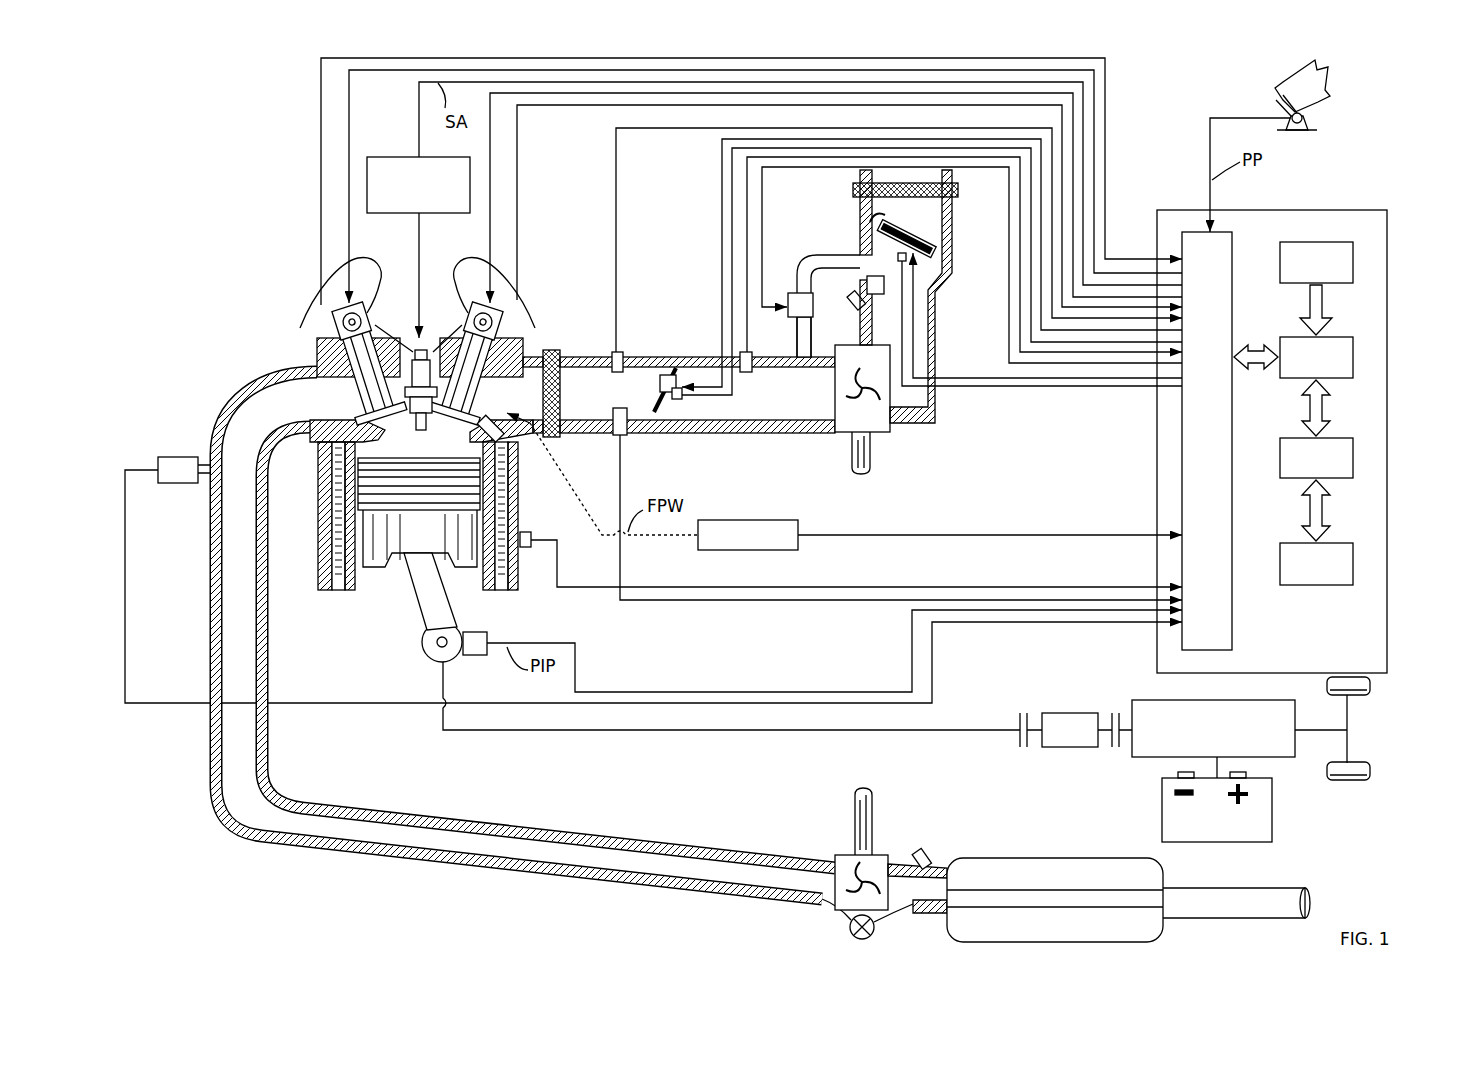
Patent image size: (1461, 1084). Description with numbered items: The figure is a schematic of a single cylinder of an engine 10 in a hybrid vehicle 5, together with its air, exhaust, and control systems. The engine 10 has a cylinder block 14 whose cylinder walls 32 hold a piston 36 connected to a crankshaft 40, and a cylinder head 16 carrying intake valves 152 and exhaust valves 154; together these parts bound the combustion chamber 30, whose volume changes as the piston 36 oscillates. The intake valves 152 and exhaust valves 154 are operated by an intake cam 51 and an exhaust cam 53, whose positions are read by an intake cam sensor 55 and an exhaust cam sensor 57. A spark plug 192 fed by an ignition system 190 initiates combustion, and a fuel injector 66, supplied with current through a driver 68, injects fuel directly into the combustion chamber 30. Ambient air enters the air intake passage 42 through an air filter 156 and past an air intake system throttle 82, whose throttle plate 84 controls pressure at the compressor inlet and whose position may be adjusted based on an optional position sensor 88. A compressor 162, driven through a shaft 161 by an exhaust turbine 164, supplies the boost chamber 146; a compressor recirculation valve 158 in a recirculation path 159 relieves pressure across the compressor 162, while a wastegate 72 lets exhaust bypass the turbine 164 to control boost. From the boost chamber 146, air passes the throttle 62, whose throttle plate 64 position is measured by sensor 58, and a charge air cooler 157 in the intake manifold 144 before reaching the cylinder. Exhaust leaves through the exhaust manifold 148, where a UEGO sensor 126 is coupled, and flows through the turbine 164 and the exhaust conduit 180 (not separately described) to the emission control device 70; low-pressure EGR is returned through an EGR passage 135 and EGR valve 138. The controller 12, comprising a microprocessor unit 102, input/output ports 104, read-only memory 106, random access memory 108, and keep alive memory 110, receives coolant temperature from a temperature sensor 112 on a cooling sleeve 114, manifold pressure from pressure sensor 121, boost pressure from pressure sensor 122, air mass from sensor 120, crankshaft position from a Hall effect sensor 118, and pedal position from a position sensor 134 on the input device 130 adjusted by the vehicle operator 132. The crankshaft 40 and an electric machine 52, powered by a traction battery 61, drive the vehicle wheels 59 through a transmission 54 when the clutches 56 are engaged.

The engine 10 is at (365, 455).
The vehicle 5 is at (911, 747).
The electronic engine controller 12 is at (1309, 428).
The cylinder block 14 is at (406, 446).
The cylinder head 16 is at (763, 321).
The combustion chamber 30 is at (420, 440).
The cylinder walls 32 is at (362, 582).
The piston 36 is at (402, 550).
The crankshaft 40 is at (430, 662).
The air intake passage 42 is at (893, 296).
The intake cam 51 is at (462, 281).
The electric machine 52 is at (1065, 747).
The exhaust cam 53 is at (377, 281).
The transmission 54 is at (1274, 757).
The intake cam sensor 55 is at (492, 325).
The clutch 56 is at (1021, 715).
The exhaust cam sensor 57 is at (343, 325).
The throttle position sensor 58 is at (680, 410).
The vehicle wheels 59 is at (1349, 780).
The traction battery 61 is at (1215, 842).
The throttle 62 is at (679, 390).
The throttle plate 64 is at (682, 360).
The fuel injector 66 is at (510, 438).
The driver 68 is at (760, 515).
The emission control device 70 is at (947, 925).
The wastegate 72 is at (850, 931).
The air intake system throttle 82 is at (880, 240).
The throttle plate 84 is at (847, 216).
The position sensor 88 is at (893, 250).
The microprocessor unit 102 is at (1353, 357).
The input/output ports 104 is at (1235, 240).
The read-only memory 106 is at (1353, 262).
The random access memory 108 is at (1353, 458).
The keep alive memory 110 is at (1353, 565).
The temperature sensor 112 is at (548, 526).
The cooling sleeve 114 is at (517, 578).
The Hall effect sensor 118 is at (470, 658).
The air mass sensor 120 is at (622, 437).
The pressure sensor 121 is at (618, 343).
The pressure sensor 122 is at (752, 355).
The UEGO sensor 126 is at (160, 457).
The input device 130 is at (1321, 105).
The vehicle operator 132 is at (1325, 82).
The position sensor 134 is at (1318, 121).
The EGR passage 135 is at (918, 857).
The EGR valve 138 is at (866, 284).
The intake manifold 144 is at (607, 404).
The intake boost chamber 146 is at (770, 404).
The exhaust manifold 148 is at (305, 409).
The intake valves 152 is at (470, 405).
The exhaust valves 154 is at (340, 410).
The air filter 156 is at (958, 190).
The charge air cooler 157 is at (558, 437).
The compressor recirculation valve 158 is at (816, 302).
The compressor recirculation path 159 is at (813, 345).
The shaft 161 is at (875, 808).
The compressor 162 is at (893, 433).
The turbine 164 is at (876, 615).
The exhaust system 180 is at (703, 618).
The ignition system 190 is at (407, 157).
The spark plug 192 is at (422, 335).